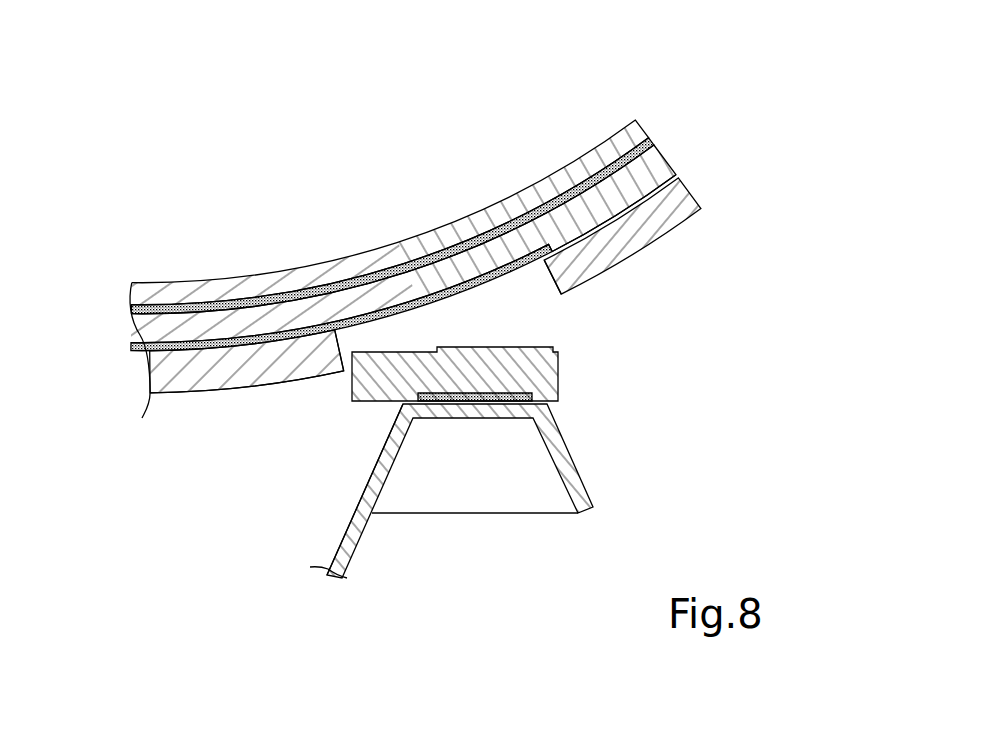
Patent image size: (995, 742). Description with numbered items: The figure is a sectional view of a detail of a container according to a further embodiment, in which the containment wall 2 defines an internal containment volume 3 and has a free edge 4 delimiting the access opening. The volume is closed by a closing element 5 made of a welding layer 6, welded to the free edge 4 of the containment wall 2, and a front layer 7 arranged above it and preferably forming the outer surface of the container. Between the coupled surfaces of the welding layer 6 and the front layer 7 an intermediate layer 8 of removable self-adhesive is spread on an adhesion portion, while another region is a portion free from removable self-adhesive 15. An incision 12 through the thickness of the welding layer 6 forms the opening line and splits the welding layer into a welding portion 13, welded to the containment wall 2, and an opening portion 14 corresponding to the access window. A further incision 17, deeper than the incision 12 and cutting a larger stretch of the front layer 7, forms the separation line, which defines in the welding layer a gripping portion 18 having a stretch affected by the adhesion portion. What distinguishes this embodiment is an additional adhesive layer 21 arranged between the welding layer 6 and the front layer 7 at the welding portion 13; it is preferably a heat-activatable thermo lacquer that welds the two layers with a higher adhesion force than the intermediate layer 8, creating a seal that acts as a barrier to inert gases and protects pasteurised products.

The containment wall 2 is at (577, 487).
The internal containment volume 3 is at (306, 535).
The free edge 4 is at (473, 408).
The closing element 5 is at (206, 276).
The welding layer 6 is at (194, 385).
The front layer 7 is at (257, 296).
The intermediate layer of removable self-adhesive 8 is at (317, 332).
The incision 12 is at (338, 348).
The welding portion 13 is at (543, 373).
The opening portion 14 is at (242, 373).
The portion free from removable self-adhesive 15 is at (632, 200).
The further incision 17 is at (543, 297).
The gripping portion 18 is at (660, 228).
The additional adhesive layer 21 is at (460, 287).